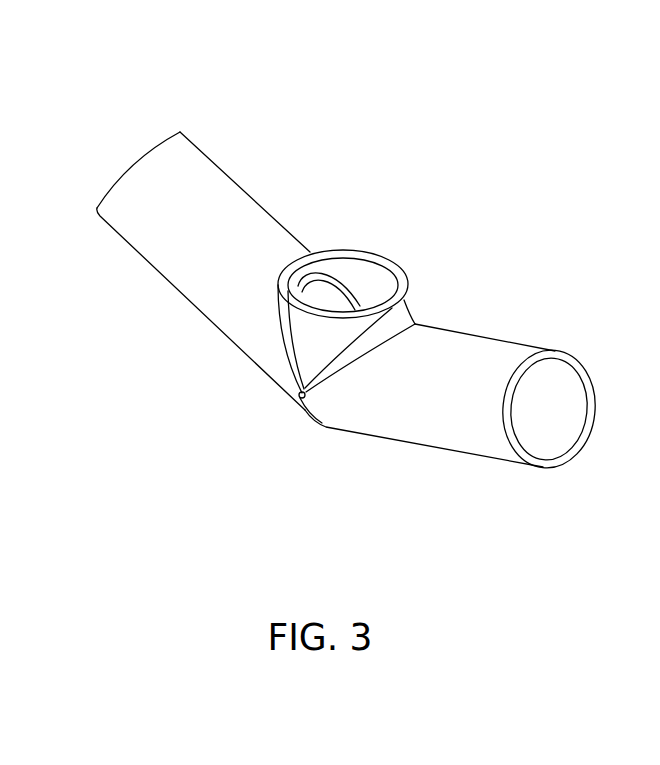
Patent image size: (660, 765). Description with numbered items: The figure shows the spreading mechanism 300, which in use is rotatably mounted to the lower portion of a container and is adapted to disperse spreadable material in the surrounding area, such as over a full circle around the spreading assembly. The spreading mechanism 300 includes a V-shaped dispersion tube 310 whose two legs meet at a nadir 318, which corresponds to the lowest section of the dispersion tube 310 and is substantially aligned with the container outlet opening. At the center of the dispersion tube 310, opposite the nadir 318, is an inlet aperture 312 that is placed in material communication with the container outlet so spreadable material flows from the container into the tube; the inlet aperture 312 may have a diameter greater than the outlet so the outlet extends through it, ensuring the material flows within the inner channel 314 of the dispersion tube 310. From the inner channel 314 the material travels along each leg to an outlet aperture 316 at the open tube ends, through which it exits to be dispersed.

The spreading mechanism 300 is at (373, 284).
The dispersion tube 310 is at (220, 168).
The inlet aperture 312 is at (375, 287).
The inner channel 314 is at (318, 293).
The outlet aperture 316 is at (148, 138).
The nadir 318 is at (343, 430).